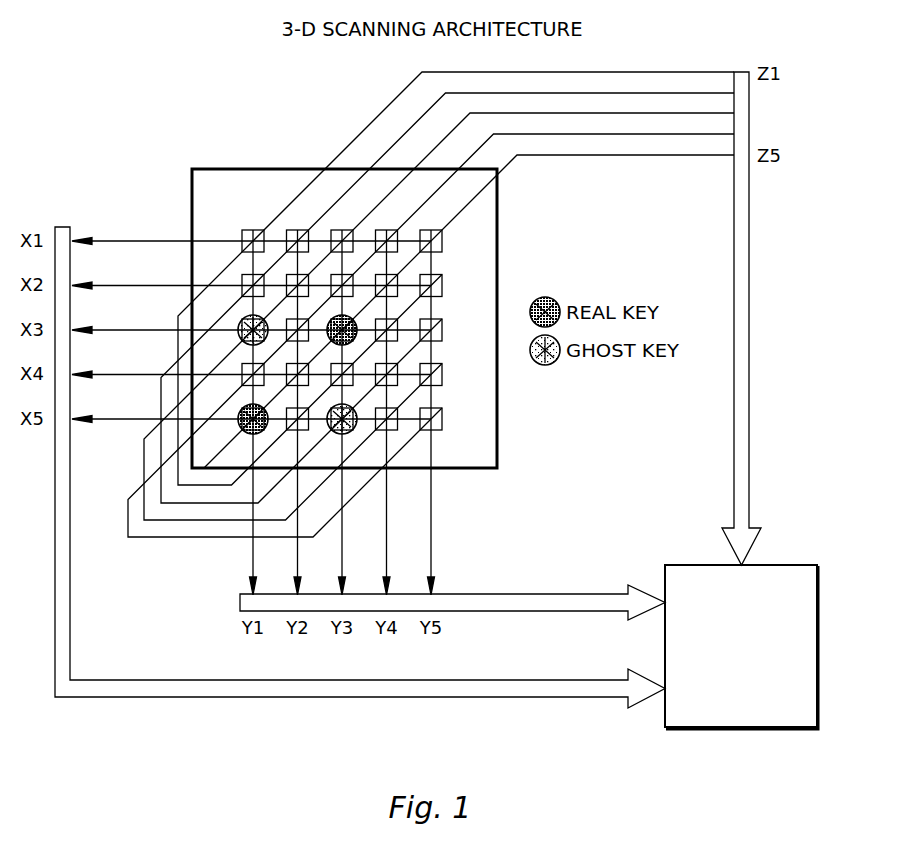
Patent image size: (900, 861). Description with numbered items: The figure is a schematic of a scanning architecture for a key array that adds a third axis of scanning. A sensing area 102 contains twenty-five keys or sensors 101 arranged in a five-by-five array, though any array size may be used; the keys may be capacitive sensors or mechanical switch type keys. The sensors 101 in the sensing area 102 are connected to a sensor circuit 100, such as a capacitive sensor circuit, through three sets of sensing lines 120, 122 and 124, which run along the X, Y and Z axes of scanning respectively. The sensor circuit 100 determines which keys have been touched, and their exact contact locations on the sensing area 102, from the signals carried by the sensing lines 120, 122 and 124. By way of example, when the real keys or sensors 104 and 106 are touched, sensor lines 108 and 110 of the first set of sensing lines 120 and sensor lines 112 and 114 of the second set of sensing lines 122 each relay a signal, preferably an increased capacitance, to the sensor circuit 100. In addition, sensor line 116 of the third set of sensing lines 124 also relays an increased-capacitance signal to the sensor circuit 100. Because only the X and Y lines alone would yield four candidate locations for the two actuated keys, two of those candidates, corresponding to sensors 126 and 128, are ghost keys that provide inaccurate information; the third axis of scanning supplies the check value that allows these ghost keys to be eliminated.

The sensor circuit 100 is at (820, 594).
The keys or sensors 101 is at (454, 419).
The sensing area 102 is at (249, 169).
The key or sensor 104 is at (243, 431).
The key or sensor 106 is at (352, 320).
The sensor line 108 is at (97, 329).
The sensor line 110 is at (97, 418).
The sensor line 112 is at (252, 562).
The sensor line 114 is at (343, 567).
The sensor line 116 is at (552, 156).
The first set of sensing lines 120 is at (509, 697).
The second set of sensing lines 122 is at (509, 595).
The third set of sensing lines 124 is at (750, 432).
The ghost key 126 is at (240, 322).
The ghost key 128 is at (352, 430).